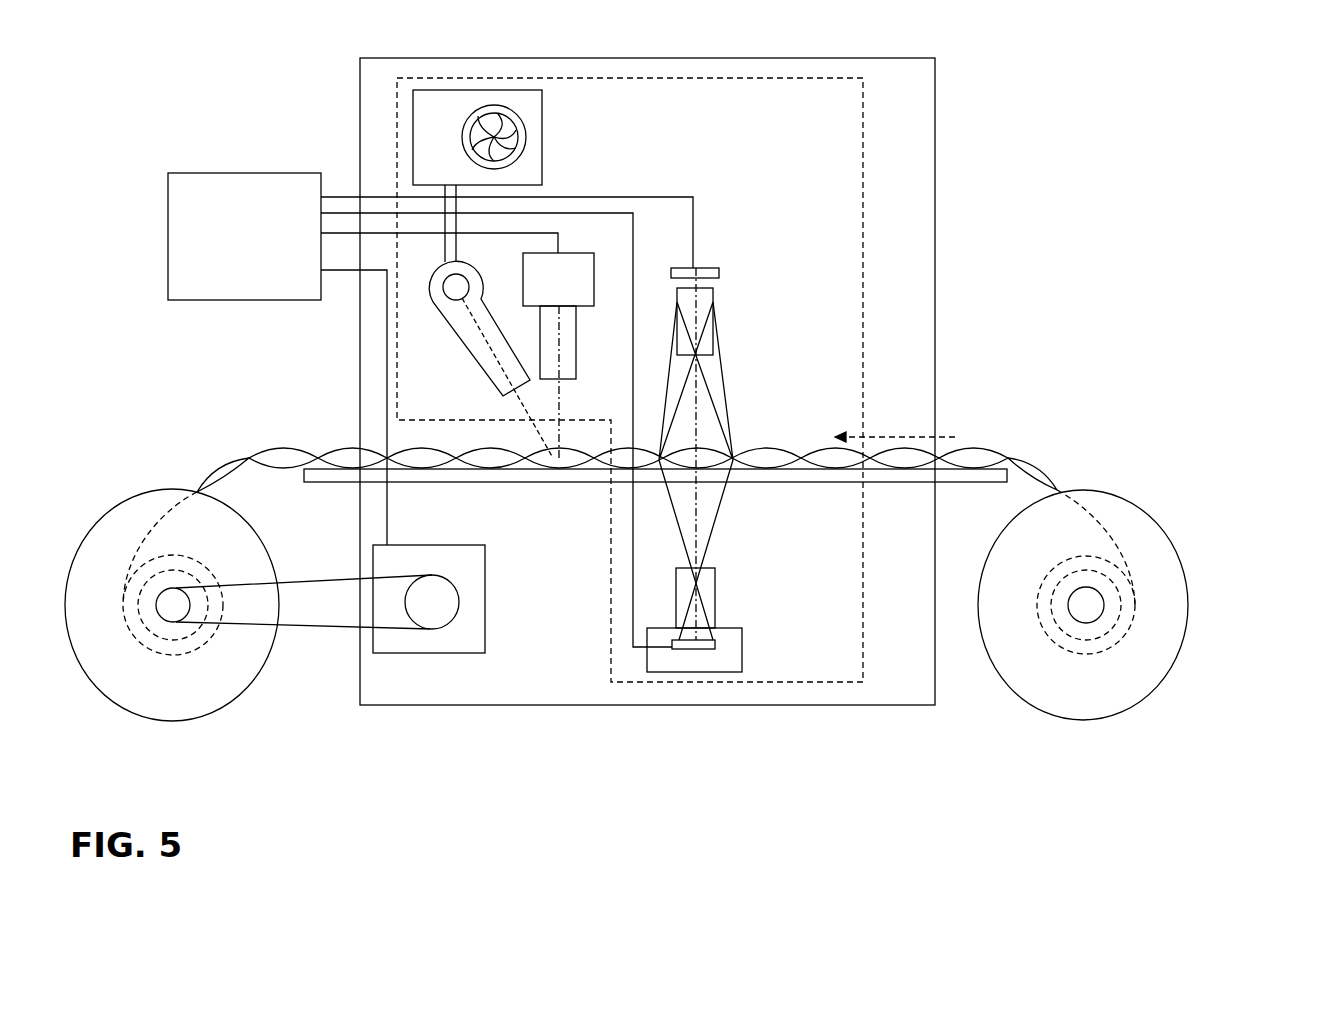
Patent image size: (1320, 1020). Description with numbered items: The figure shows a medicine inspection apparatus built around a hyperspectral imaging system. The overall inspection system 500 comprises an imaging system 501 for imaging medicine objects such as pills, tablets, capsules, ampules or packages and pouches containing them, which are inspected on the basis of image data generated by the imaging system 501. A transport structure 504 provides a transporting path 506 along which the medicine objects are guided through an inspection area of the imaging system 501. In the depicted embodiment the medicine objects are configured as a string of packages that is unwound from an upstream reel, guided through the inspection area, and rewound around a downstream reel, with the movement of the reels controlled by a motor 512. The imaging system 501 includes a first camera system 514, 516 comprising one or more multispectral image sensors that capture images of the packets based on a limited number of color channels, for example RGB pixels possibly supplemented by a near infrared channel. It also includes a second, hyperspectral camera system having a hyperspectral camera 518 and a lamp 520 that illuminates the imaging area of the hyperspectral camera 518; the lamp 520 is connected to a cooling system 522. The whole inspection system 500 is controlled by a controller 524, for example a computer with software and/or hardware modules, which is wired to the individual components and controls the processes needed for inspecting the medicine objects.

The inspection system 500 is at (1012, 183).
The imaging system 501 is at (805, 87).
The transport structure 504 is at (609, 465).
The transporting path 506 is at (908, 424).
The motor 512 is at (468, 647).
The first camera system 514 is at (730, 652).
The first camera system 516 is at (717, 258).
The hyperspectral camera 518 is at (558, 356).
The lamp 520 is at (438, 327).
The cooling system 522 is at (445, 103).
The controller 524 is at (430, 410).